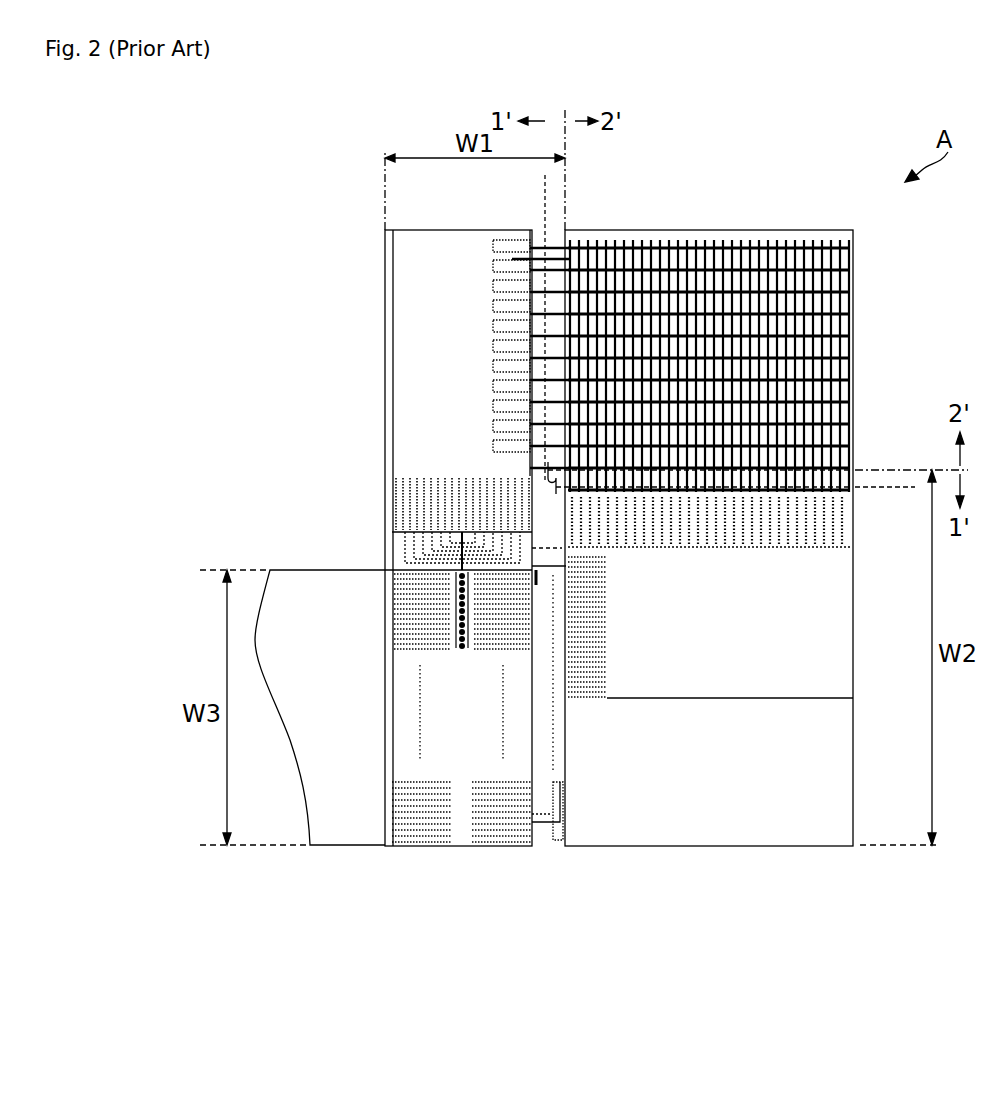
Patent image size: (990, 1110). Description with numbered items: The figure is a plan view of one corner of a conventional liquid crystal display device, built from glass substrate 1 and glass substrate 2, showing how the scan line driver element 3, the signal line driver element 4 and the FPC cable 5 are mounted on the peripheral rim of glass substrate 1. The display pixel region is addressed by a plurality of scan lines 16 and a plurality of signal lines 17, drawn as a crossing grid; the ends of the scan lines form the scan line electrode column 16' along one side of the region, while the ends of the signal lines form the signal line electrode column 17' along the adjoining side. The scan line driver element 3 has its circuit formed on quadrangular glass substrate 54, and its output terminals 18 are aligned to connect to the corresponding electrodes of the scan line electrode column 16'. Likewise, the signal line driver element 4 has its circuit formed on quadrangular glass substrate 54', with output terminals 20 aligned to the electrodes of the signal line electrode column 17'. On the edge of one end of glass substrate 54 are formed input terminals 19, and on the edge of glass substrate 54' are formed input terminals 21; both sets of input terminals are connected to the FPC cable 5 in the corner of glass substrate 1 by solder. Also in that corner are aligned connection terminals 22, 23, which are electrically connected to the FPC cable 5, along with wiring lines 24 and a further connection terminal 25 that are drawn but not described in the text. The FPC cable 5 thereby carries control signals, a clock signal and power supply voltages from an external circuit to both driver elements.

The glass substrate 1 is at (388, 296).
The glass substrate 2 is at (679, 543).
The scan line driver element 3 is at (398, 243).
The signal line driver element 4 is at (846, 628).
The FPC cable 5 is at (322, 575).
The scan lines 16 is at (530, 317).
The scan line electrode column 16' is at (500, 270).
The signal lines 17 is at (738, 410).
The signal line electrode column 17' is at (709, 418).
The output terminals 18 is at (503, 240).
The input terminals 19 is at (398, 478).
The output terminals 20 is at (848, 532).
The input terminals 21 is at (607, 702).
The connection terminals 22 is at (402, 576).
The connection terminals 23 is at (482, 847).
The wiring lines 24 is at (402, 545).
The connection terminal 25 is at (550, 847).
The glass substrate 54 is at (370, 335).
The glass substrate 54' is at (880, 691).